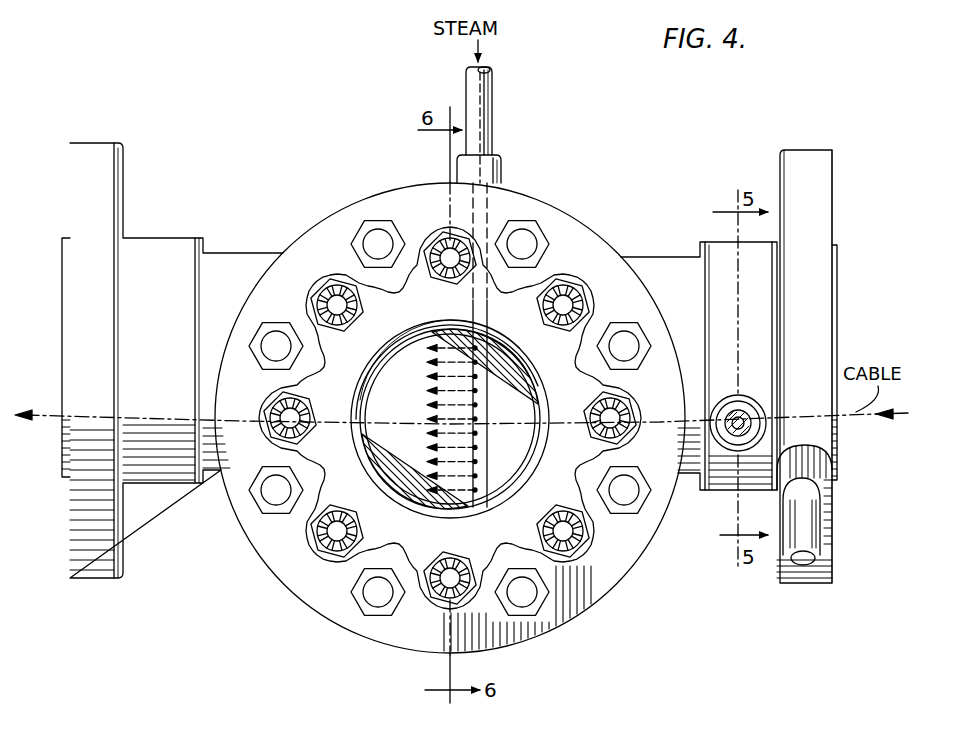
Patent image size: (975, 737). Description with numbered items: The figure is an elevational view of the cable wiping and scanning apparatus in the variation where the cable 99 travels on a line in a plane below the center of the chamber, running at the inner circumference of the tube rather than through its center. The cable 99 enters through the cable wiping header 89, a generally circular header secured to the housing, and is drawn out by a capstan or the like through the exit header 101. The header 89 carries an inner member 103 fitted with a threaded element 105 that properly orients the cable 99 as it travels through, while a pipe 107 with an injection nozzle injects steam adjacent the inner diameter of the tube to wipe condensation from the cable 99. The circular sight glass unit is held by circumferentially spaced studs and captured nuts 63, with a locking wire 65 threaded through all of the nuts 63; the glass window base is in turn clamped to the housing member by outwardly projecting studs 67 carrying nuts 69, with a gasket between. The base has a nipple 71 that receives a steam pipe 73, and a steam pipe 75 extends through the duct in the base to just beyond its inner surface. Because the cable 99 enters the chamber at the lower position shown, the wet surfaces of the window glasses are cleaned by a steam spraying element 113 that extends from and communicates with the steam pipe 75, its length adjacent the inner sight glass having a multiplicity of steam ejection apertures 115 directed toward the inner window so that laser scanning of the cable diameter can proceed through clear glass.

The captured nut 63 is at (575, 552).
The locking wire 65 is at (586, 331).
The stud 67 is at (525, 597).
The nut 69 is at (522, 618).
The nipple 71 is at (490, 175).
The steam pipe 73 is at (489, 107).
The steam pipe 75 is at (488, 210).
The cable wiping header 89 is at (842, 193).
The cable 99 is at (856, 446).
The exit header 101 is at (113, 197).
The inner member 103 is at (708, 250).
The threaded element 105 is at (750, 417).
The pipe 107 is at (816, 518).
The steam spraying element 113 is at (489, 412).
The steam ejection apertures 115 is at (477, 436).